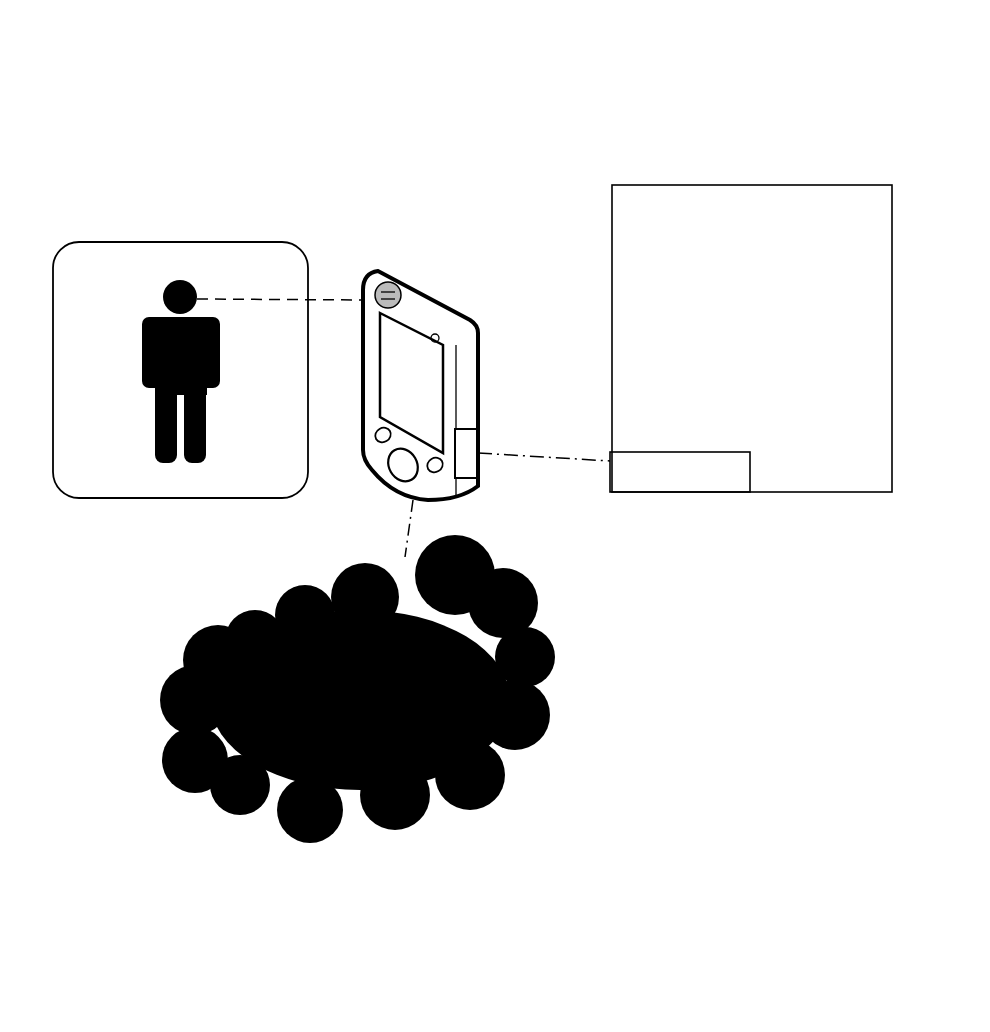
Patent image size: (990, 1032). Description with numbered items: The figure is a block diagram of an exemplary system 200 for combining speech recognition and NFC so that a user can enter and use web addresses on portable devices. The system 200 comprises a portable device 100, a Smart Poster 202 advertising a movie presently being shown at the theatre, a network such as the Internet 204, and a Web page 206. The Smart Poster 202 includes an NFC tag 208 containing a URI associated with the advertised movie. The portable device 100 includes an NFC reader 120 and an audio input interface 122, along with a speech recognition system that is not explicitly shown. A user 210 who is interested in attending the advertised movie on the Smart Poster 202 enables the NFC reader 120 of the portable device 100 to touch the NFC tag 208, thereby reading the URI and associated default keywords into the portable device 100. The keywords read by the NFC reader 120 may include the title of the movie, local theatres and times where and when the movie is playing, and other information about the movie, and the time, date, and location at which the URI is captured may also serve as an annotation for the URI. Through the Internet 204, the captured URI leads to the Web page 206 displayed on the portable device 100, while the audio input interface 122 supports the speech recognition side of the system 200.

The system 200 is at (959, 45).
The Smart Poster 202 is at (772, 336).
The Internet 204 is at (543, 643).
The Web page 206 is at (363, 332).
The NFC tag 208 is at (662, 492).
The user 210 is at (172, 240).
The portable device 100 is at (448, 367).
The NFC reader 120 is at (468, 428).
The audio input interface 122 is at (378, 273).